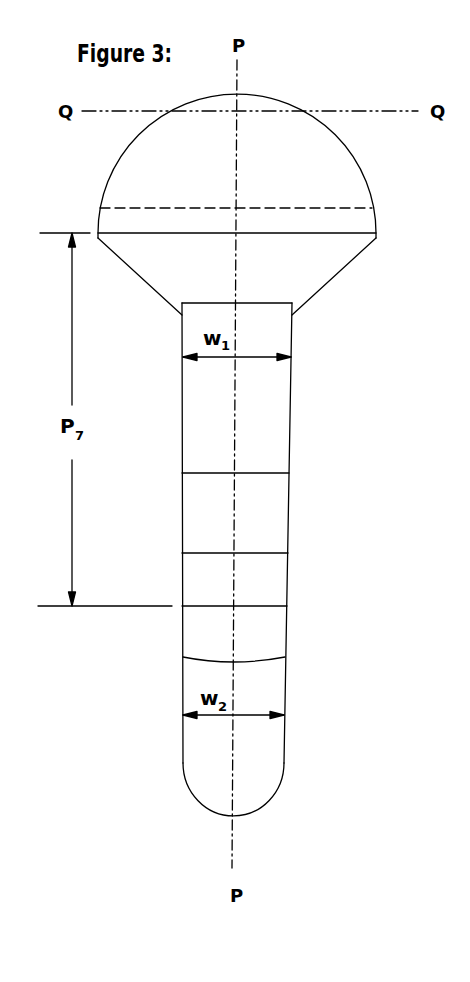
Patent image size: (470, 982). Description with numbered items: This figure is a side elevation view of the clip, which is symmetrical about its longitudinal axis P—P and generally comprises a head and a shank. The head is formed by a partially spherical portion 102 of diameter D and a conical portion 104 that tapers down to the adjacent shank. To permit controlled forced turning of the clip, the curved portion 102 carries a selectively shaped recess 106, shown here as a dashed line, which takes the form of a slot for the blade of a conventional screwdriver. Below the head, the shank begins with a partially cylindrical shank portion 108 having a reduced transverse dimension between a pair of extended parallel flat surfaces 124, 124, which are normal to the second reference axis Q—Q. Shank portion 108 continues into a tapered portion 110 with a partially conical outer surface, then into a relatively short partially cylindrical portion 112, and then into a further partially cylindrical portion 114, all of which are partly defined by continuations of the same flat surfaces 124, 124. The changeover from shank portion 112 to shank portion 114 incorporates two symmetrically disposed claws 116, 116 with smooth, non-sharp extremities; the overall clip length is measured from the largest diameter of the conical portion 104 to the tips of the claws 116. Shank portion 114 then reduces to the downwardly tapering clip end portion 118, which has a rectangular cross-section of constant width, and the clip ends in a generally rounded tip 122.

The partially spherical portion 102 is at (335, 177).
The conical portion 104 is at (335, 275).
The recess 106 is at (348, 221).
The partially cylindrical shank portion 108 is at (277, 418).
The tapered portion 110 is at (272, 515).
The partially cylindrical portion 112 is at (267, 584).
The partially cylindrical portion 114 is at (268, 631).
The claws 116 is at (215, 607).
The clip end portion 118 is at (268, 688).
The generally rounded tip 122 is at (227, 817).
The flat surfaces 124 is at (182, 407).